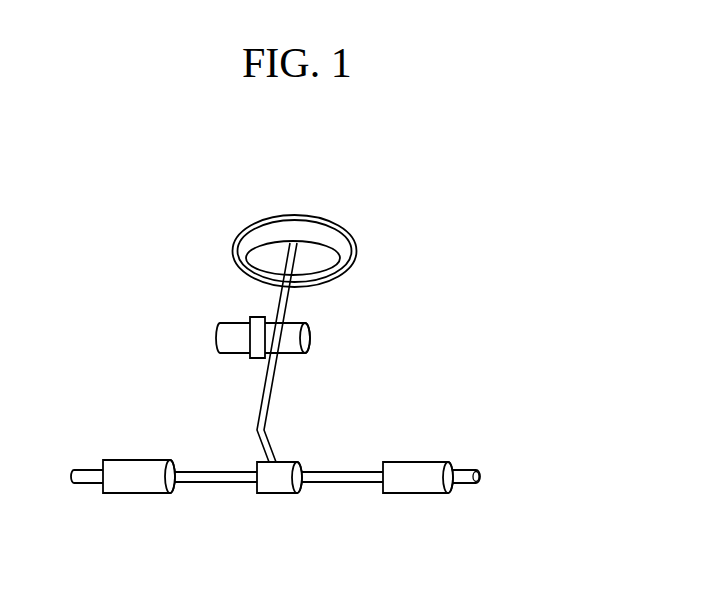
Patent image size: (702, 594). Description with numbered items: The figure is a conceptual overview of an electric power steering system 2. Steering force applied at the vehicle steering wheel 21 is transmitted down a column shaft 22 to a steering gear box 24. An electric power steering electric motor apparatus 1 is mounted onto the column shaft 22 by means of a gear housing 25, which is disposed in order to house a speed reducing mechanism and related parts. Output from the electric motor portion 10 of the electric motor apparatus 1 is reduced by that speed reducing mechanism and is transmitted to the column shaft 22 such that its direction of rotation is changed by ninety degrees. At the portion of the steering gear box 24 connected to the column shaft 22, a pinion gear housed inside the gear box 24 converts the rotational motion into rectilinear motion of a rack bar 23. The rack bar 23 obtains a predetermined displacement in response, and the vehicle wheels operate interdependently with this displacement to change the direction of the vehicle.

The electric power steering system 2 is at (82, 161).
The electric power steering electric motor apparatus 1 is at (134, 277).
The steering wheel 21 is at (375, 238).
The column shaft 22 is at (387, 352).
The electric motor portion 10 is at (192, 328).
The gear housing 25 is at (391, 317).
The steering gear box 24 is at (390, 432).
The rack bar 23 is at (299, 457).